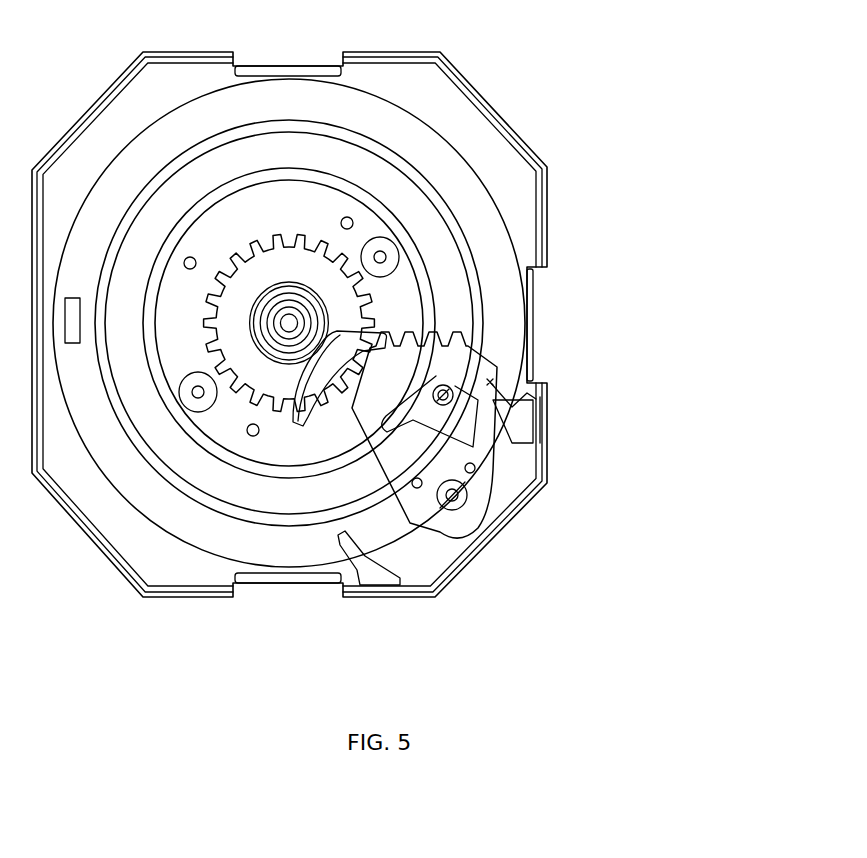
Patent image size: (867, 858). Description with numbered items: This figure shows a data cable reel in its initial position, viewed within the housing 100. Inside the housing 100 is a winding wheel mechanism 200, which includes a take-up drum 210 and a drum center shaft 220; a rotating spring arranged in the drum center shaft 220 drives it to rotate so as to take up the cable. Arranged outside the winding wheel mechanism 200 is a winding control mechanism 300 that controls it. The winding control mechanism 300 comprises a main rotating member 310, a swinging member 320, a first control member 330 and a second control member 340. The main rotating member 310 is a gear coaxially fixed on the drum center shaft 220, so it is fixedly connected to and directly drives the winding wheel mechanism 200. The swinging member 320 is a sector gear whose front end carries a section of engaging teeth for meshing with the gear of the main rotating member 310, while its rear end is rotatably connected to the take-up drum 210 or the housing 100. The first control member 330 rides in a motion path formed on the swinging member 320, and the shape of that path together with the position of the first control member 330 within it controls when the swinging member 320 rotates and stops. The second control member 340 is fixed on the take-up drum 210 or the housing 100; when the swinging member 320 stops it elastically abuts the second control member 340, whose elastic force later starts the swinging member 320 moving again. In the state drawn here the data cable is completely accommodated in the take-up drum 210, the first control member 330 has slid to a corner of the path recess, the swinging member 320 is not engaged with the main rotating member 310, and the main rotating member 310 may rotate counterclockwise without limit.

The housing 100 is at (157, 583).
The winding wheel mechanism 200 is at (650, 52).
The take-up drum 210 is at (421, 154).
The drum center shaft 220 is at (289, 323).
The winding control mechanism 300 is at (670, 245).
The main rotating member 310 is at (378, 311).
The swinging member 320 is at (483, 363).
The first control member 330 is at (463, 391).
The second control member 340 is at (527, 422).